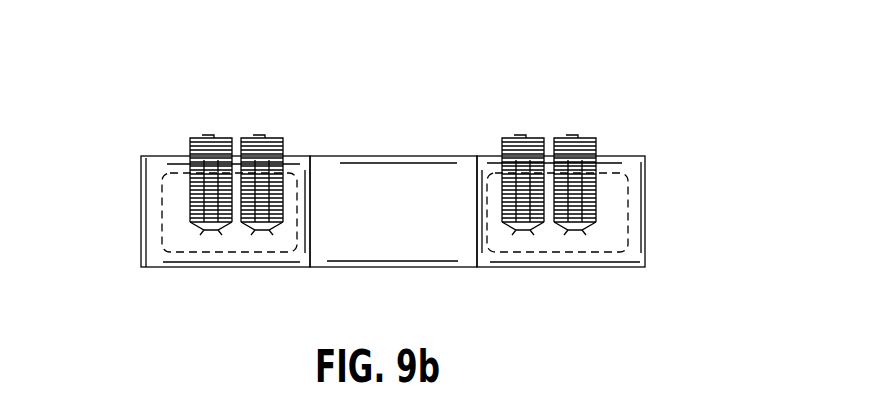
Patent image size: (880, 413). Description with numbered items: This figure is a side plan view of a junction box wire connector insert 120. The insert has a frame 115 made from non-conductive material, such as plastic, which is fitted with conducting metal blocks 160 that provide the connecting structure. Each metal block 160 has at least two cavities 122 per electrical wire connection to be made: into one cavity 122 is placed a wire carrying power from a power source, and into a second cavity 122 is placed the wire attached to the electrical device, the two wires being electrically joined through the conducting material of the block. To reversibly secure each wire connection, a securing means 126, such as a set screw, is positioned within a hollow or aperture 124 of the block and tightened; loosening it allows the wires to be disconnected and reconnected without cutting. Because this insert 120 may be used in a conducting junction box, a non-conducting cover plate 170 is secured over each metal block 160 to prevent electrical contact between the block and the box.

The non-conducting electrical conductor connector insert 120 is at (378, 139).
The frame 115 is at (433, 227).
The metal block 160 is at (173, 212).
The non-conducting cover plate 170 is at (170, 228).
The aperture 124 is at (200, 189).
The connector or fastening means 126 is at (255, 137).
The cavity 122 is at (257, 229).